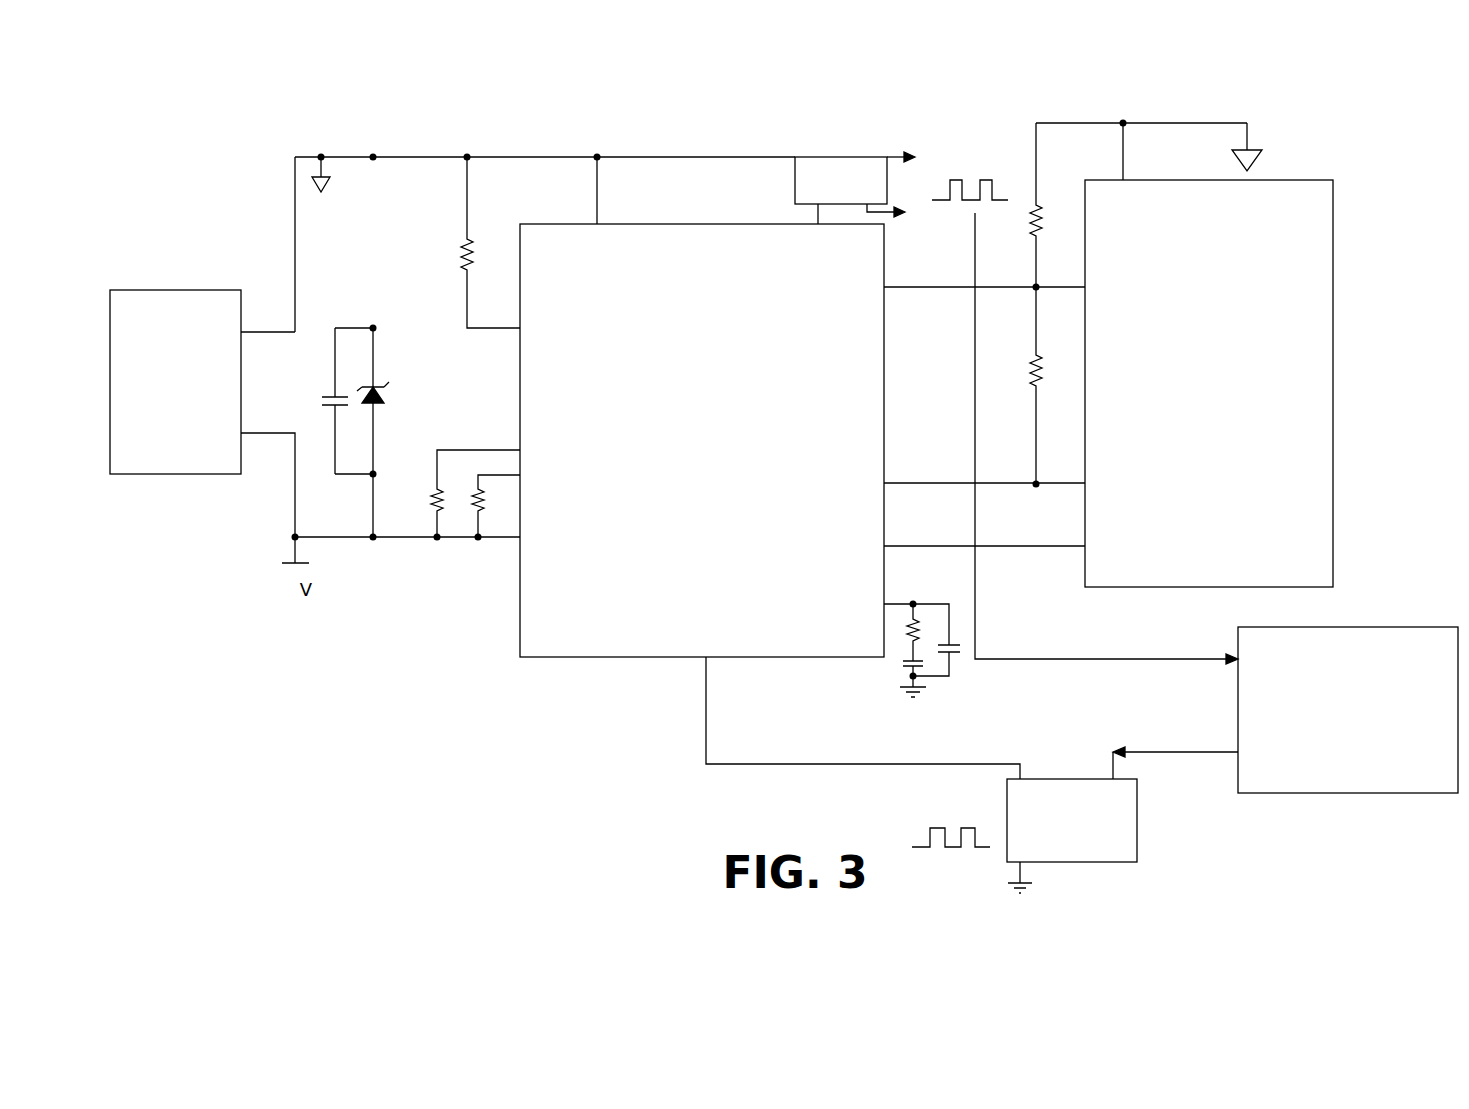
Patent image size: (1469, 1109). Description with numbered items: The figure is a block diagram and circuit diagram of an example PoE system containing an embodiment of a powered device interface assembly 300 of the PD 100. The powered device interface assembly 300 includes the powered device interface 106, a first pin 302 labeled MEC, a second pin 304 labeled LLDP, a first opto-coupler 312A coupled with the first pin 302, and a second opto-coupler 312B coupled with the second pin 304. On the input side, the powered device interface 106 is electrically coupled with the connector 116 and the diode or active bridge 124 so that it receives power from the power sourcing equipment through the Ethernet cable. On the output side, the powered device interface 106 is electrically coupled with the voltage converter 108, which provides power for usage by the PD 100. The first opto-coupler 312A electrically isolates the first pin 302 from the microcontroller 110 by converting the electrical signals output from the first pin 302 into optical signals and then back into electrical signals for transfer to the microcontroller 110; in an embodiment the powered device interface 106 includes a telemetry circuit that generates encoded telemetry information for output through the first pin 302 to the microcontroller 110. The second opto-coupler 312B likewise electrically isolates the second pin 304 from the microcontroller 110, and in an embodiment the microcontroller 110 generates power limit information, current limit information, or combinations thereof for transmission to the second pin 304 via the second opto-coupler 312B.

The powered device 100 is at (398, 78).
The powered device interface assembly 300 is at (700, 125).
The first pin 302 is at (815, 222).
The second pin 304 is at (703, 660).
The first opto-coupler 312A is at (828, 157).
The second opto-coupler 312B is at (1113, 862).
The connector 116 is at (175, 391).
The diode or active bridge 124 is at (178, 474).
The powered device interface 106 is at (702, 440).
The voltage converter 108 is at (1209, 383).
The microcontroller 110 is at (1348, 710).